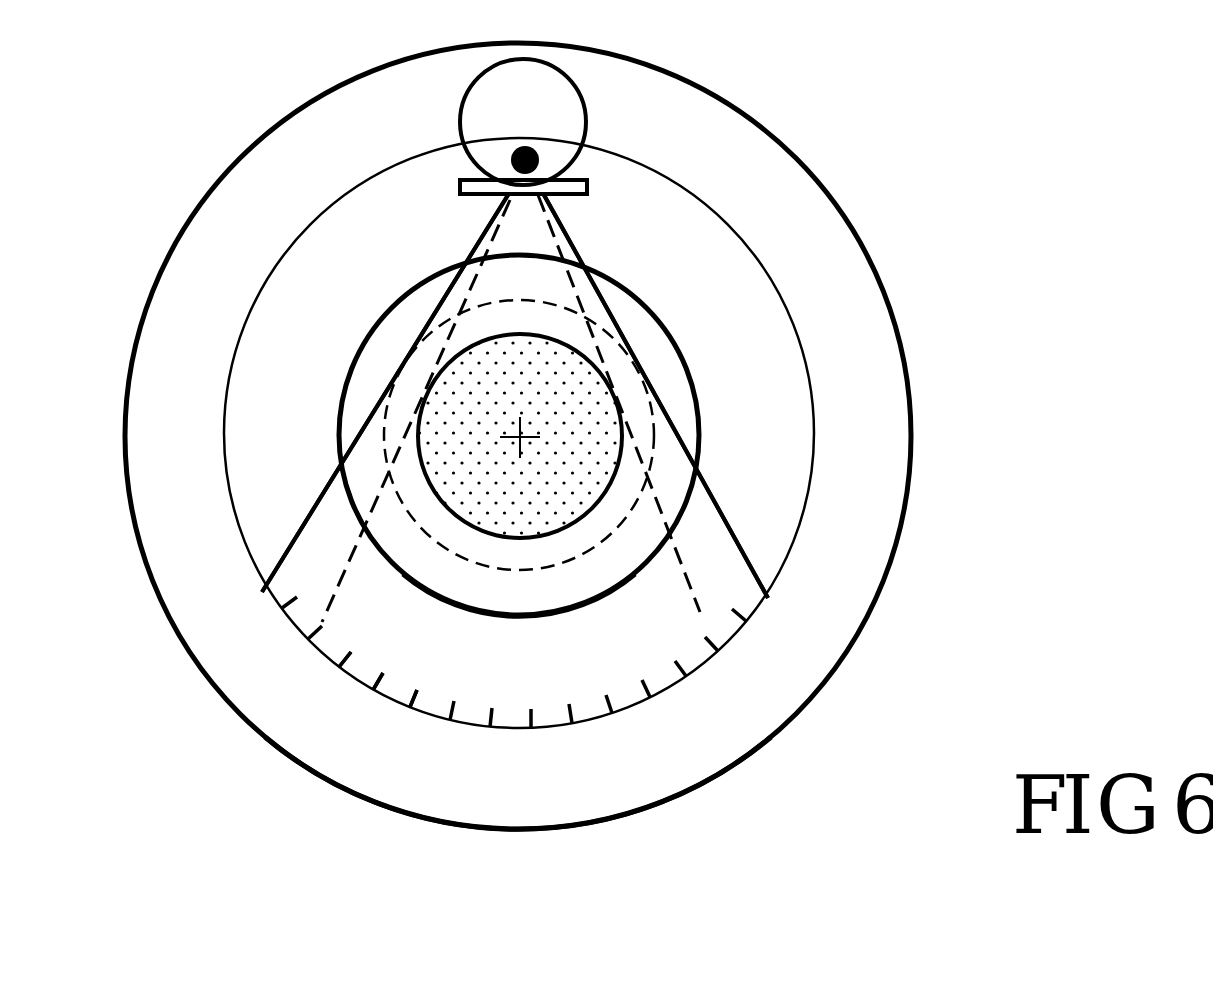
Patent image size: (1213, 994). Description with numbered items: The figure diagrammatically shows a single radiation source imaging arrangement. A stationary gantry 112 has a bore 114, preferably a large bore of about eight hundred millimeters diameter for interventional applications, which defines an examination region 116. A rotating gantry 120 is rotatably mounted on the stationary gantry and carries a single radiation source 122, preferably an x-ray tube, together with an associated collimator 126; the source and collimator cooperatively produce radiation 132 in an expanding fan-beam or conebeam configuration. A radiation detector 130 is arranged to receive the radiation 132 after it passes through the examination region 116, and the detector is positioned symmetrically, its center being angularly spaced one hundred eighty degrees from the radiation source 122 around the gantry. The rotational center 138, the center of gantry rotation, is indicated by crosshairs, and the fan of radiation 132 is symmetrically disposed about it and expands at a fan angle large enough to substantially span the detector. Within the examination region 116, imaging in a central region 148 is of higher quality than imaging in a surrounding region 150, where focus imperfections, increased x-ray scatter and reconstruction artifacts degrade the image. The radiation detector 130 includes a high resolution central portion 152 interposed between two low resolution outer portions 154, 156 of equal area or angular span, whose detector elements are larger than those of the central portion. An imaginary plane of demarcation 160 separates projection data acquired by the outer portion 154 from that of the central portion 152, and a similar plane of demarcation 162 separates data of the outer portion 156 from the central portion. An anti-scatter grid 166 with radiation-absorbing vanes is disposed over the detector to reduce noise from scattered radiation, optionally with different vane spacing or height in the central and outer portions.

The stationary gantry 112 is at (262, 694).
The bore 114 is at (646, 306).
The examination region 116 is at (494, 584).
The rotating gantry 120 is at (420, 152).
The radiation source 122 is at (563, 75).
The collimator 126 is at (577, 178).
The radiation detector 130 is at (547, 760).
The radiation 132 is at (535, 238).
The rotational center 138 is at (522, 442).
The central region 148 is at (472, 318).
The surrounding region 150 is at (383, 441).
The high resolution central portion 152 is at (593, 727).
The low resolution outer portion 154 is at (290, 627).
The low resolution outer portion 156 is at (740, 632).
The plane of demarcation 160 is at (333, 593).
The plane of demarcation 162 is at (697, 603).
The anti-scatter grid 166 is at (416, 692).